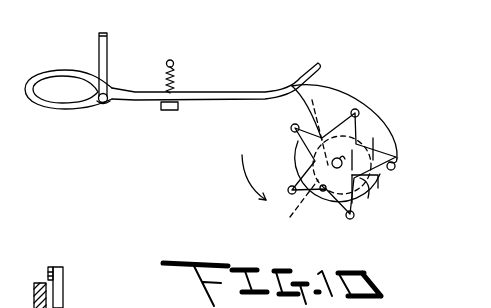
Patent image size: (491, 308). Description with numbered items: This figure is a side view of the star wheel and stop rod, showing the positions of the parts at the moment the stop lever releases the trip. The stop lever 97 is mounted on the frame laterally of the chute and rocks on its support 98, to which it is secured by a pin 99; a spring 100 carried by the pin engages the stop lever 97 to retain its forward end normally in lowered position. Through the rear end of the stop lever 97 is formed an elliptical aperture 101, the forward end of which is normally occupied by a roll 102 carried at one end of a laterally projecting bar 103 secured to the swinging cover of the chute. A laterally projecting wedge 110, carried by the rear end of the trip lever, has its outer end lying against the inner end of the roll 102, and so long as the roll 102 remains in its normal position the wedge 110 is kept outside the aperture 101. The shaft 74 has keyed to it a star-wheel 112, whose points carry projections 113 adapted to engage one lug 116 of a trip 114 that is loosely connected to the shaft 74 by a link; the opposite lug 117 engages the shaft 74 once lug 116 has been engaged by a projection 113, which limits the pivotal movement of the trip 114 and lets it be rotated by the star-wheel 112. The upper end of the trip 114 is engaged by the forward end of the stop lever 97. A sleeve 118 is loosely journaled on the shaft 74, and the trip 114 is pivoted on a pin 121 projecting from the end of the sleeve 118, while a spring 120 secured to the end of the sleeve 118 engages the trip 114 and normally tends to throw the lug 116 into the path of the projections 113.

The shaft 74 is at (336, 170).
The stop lever 97 is at (201, 93).
The support 98 is at (170, 110).
The pin 99 is at (172, 66).
The spring 100 is at (166, 80).
The elliptical aperture 101 is at (68, 89).
The roll 102 is at (100, 101).
The laterally projecting bar 103 is at (109, 35).
The wedge 110 is at (106, 105).
The star-wheel 112 is at (352, 200).
The projections 113 is at (289, 187).
The trip 114 is at (366, 122).
The lug 116 is at (399, 159).
The lug 117 is at (298, 206).
The sleeve 118 is at (372, 185).
The spring 120 is at (372, 188).
The pin 121 is at (63, 305).